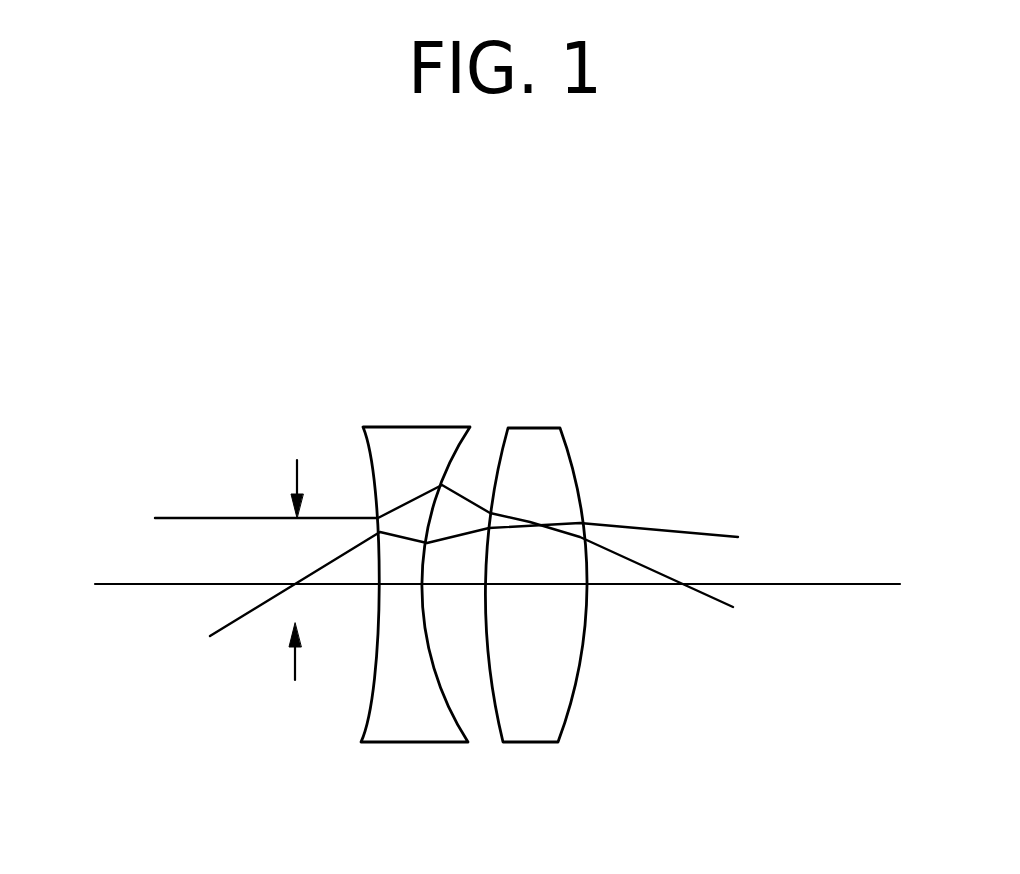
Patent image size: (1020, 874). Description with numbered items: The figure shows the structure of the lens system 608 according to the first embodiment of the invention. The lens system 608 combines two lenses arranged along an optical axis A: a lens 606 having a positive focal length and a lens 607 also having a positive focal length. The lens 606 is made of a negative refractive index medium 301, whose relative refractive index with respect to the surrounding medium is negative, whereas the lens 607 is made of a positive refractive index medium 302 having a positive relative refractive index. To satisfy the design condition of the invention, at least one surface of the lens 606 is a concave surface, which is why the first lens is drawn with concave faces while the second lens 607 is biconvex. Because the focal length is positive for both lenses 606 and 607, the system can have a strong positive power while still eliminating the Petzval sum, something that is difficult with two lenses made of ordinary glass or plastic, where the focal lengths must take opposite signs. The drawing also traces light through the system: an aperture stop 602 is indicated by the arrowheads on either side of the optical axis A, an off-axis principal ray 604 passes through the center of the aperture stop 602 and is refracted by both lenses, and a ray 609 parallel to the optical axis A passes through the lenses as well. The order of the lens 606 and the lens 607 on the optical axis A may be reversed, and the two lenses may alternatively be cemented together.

The optical axis A is at (130, 583).
The negative refractive index medium 301 is at (407, 715).
The positive refractive index medium 302 is at (527, 727).
The aperture stop 602 is at (295, 680).
The principal ray 604 is at (238, 622).
The lens 606 is at (415, 583).
The lens 607 is at (536, 592).
The lens system 608 is at (479, 565).
The on-axis parallel light ray 609 is at (205, 517).